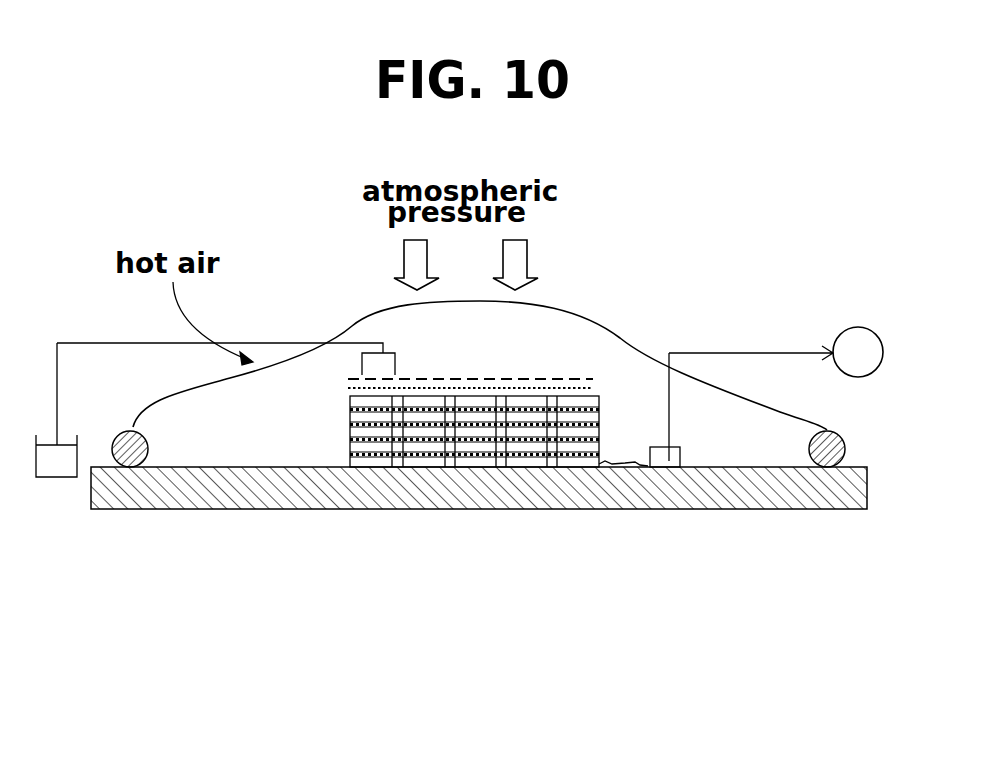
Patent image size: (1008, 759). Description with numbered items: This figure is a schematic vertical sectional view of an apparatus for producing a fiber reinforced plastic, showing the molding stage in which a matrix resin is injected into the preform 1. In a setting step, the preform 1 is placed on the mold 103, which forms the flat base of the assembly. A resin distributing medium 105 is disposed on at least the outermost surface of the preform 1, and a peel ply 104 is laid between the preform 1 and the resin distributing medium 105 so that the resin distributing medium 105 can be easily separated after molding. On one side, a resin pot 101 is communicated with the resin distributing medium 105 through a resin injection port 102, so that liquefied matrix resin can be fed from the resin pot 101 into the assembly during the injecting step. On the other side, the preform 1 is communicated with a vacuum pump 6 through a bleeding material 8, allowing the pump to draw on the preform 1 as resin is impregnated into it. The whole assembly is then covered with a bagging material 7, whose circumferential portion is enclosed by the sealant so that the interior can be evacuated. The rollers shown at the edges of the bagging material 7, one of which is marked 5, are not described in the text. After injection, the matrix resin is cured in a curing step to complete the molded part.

The preform 1 is at (321, 427).
The sealing roller 5 is at (845, 428).
The vacuum pump 6 is at (860, 328).
The bagging material 7 is at (608, 326).
The bleeding material 8 is at (622, 509).
The resin pot 101 is at (55, 462).
The resin injection port 102 is at (373, 360).
The mold 103 is at (773, 509).
The peel ply 104 is at (525, 387).
The resin distributing medium 105 is at (495, 377).